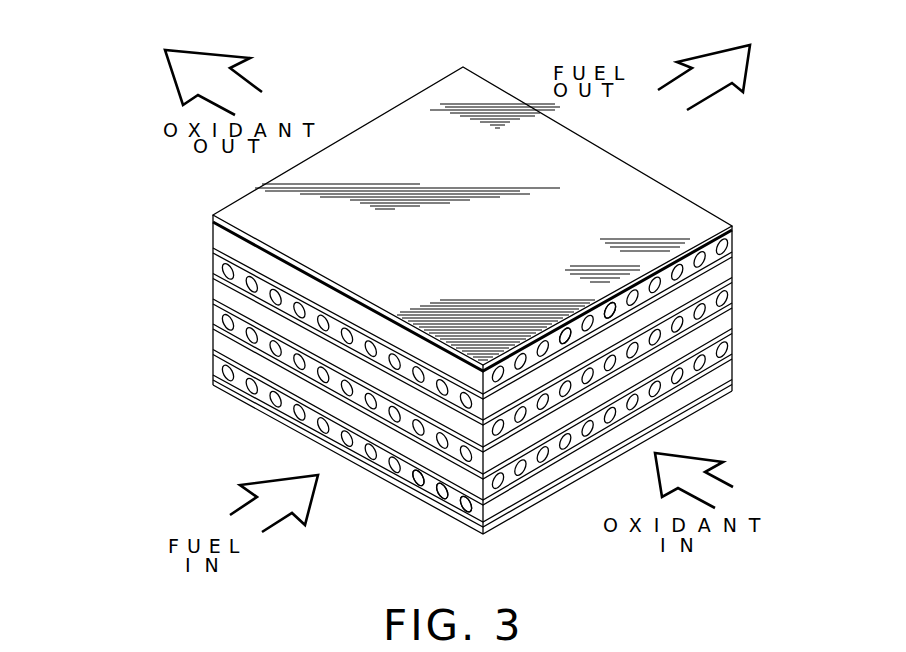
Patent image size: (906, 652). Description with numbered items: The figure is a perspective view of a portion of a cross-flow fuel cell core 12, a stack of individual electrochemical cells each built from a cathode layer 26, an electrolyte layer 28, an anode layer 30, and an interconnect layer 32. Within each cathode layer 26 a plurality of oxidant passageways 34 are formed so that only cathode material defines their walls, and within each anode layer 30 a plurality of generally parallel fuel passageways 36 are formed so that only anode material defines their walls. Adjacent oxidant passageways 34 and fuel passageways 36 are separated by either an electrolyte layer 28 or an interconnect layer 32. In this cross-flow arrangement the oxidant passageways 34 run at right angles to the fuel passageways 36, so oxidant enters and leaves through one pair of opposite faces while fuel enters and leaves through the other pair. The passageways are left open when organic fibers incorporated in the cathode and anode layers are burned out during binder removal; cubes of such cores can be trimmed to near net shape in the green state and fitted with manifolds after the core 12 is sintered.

The cross-flow fuel cell core 12 is at (479, 180).
The cathode layer 26 is at (733, 242).
The electrolyte layer 28 is at (693, 212).
The anode layer 30 is at (213, 258).
The interconnect layer 32 is at (733, 255).
The oxidant passageways 34 is at (608, 313).
The fuel passageways 36 is at (465, 508).